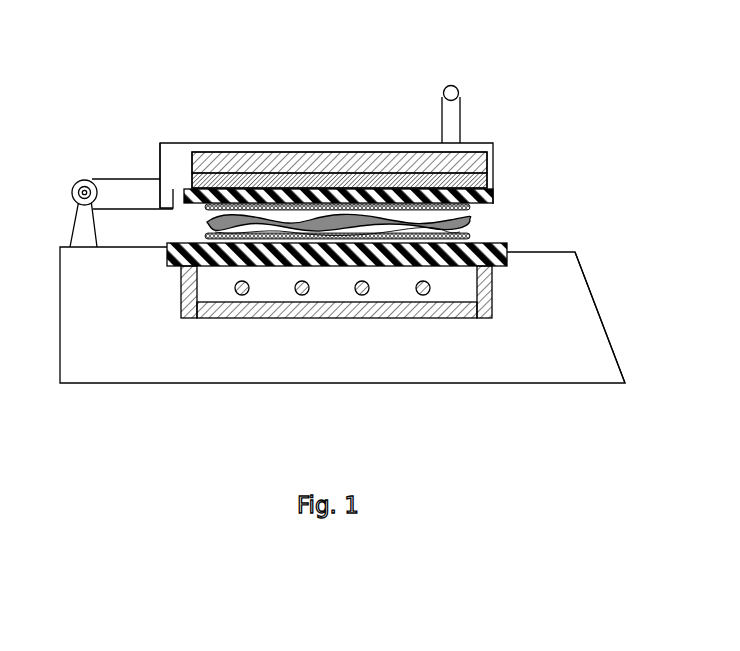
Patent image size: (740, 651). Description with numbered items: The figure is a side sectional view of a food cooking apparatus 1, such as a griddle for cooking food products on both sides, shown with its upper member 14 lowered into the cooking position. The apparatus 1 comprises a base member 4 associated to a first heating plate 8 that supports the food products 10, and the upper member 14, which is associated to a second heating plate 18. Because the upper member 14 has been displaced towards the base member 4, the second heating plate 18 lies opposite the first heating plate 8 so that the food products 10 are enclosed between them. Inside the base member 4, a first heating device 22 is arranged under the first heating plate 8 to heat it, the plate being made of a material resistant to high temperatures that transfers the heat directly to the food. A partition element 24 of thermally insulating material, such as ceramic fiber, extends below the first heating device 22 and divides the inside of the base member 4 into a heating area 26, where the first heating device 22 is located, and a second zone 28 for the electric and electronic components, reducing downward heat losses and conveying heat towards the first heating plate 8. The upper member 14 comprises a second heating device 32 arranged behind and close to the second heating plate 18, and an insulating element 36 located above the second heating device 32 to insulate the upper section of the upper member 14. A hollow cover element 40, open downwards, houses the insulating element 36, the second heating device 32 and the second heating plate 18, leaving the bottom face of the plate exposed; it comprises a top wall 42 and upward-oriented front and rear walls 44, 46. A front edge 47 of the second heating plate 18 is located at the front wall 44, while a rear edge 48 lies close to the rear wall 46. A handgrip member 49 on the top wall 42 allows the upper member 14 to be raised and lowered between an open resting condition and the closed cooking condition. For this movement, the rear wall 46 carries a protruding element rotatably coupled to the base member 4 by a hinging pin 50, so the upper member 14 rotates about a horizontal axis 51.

The apparatus 1 is at (574, 70).
The base member 4 is at (604, 320).
The first heating plate 8 is at (507, 246).
The food products 10 is at (198, 225).
The upper member 14 is at (134, 132).
The second heating plate 18 is at (393, 195).
The first heating device 22 is at (418, 294).
The partition element 24 is at (283, 305).
The heating area 26 is at (218, 292).
The second zone 28 is at (120, 367).
The second heating device 32 is at (358, 153).
The insulating element 36 is at (298, 165).
The cover element 40 is at (161, 142).
The top wall 42 is at (250, 143).
The front wall 44 is at (495, 162).
The rear wall 46 is at (159, 163).
The front edge 47 is at (495, 197).
The rear edge 48 is at (174, 189).
The handgrip member 49 is at (443, 87).
The hinging pin 50 is at (83, 181).
The horizontal axis 51 is at (70, 206).